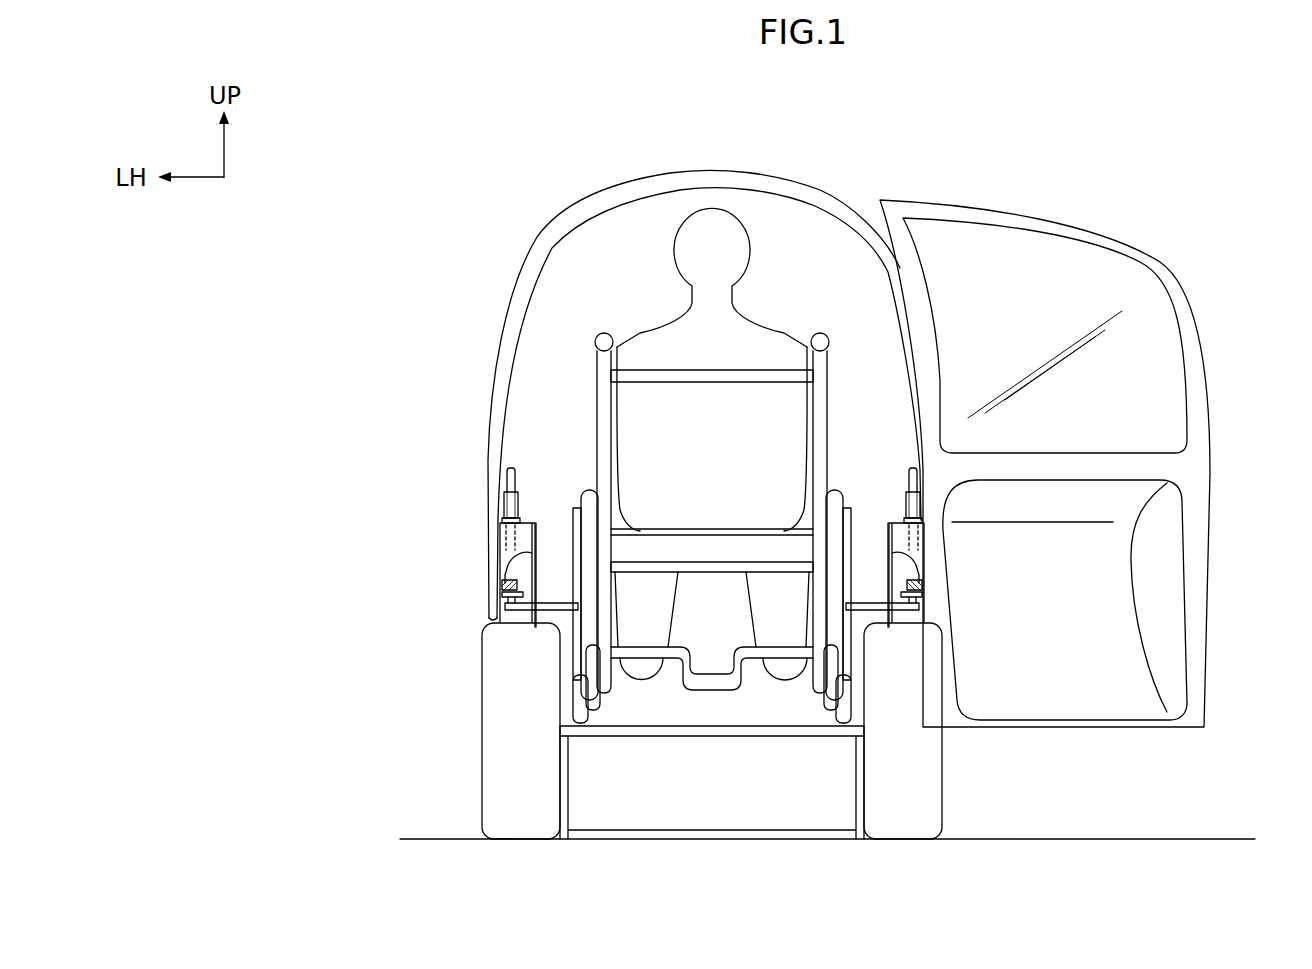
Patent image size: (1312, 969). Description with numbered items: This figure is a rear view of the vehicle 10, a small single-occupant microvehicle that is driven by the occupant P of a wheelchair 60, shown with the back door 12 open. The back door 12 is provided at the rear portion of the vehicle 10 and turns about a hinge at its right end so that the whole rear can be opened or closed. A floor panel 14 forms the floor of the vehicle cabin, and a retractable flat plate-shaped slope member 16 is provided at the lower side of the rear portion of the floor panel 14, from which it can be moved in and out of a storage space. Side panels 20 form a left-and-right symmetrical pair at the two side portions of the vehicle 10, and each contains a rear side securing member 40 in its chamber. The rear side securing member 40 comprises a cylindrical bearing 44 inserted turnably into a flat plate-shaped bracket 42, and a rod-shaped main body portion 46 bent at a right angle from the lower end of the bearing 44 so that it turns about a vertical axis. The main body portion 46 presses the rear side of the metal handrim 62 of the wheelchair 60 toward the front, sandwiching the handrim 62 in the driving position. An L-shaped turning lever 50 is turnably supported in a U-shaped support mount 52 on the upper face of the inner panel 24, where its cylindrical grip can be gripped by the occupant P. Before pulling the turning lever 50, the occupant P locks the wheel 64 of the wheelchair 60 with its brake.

The vehicle 10 is at (760, 170).
The back door 12 is at (1210, 461).
The floor panel 14 is at (690, 717).
The slope member 16 is at (767, 810).
The side panel 20 is at (893, 512).
The inner panel 24 is at (886, 515).
The rear side securing member 40 is at (711, 730).
The bracket 42 is at (923, 595).
The bearing 44 is at (925, 587).
The main body portion 46 is at (890, 625).
The turning lever 50 is at (914, 466).
The support mount 52 is at (922, 522).
The wheelchair 60 is at (833, 370).
The handrim 62 is at (845, 488).
The wheel 64 is at (838, 637).
The occupant P is at (707, 230).